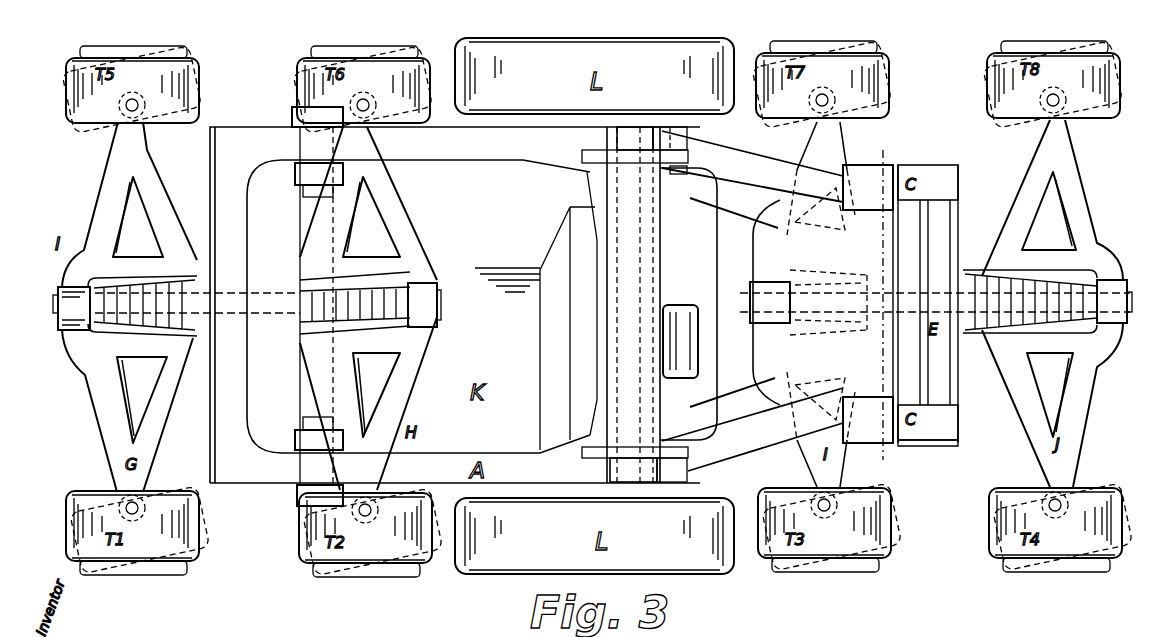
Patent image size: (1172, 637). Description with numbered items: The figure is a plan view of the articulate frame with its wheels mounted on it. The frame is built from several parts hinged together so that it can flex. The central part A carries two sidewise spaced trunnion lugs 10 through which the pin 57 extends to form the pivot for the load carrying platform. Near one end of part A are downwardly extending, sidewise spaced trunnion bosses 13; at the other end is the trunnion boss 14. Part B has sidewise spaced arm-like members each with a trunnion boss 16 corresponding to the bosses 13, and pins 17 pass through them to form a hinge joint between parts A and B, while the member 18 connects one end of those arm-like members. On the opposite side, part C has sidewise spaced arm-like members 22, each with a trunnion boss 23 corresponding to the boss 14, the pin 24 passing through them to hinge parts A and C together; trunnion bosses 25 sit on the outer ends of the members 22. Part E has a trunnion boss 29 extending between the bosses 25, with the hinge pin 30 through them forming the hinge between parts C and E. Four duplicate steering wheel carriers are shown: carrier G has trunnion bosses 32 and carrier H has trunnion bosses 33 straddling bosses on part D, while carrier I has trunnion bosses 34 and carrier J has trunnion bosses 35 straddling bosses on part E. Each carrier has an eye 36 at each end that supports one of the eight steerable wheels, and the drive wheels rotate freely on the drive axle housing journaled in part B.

The trunnion lugs 10 is at (617, 140).
The trunnion bosses 13 is at (292, 112).
The trunnion boss 14 is at (862, 230).
The trunnion boss 16 is at (300, 178).
The pins 17 is at (322, 197).
The member 18 is at (208, 165).
The arm-like members 22 is at (752, 301).
The trunnion boss 23 is at (898, 168).
The pin 24 is at (876, 443).
The trunnion bosses 25 is at (940, 182).
The trunnion boss 29 is at (940, 228).
The hinge pin 30 is at (940, 446).
The trunnion bosses 32 is at (62, 325).
The trunnion bosses 33 is at (430, 322).
The trunnion bosses 34 is at (752, 310).
The trunnion bosses 35 is at (1120, 300).
The eye 36 is at (378, 88).
The pin 57 is at (645, 268).